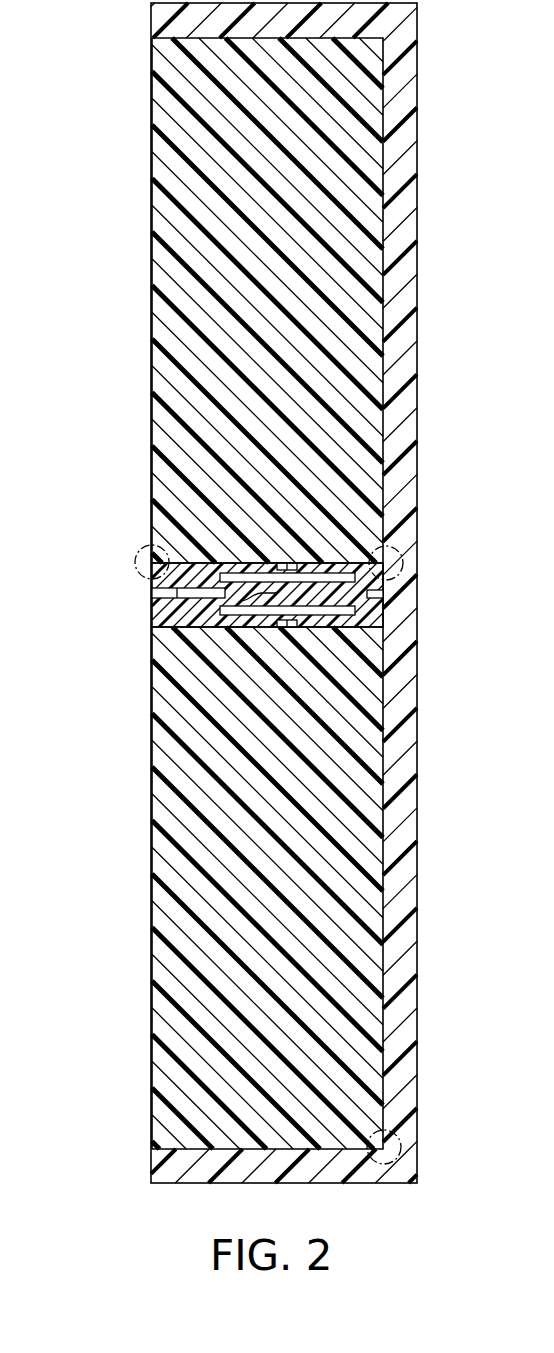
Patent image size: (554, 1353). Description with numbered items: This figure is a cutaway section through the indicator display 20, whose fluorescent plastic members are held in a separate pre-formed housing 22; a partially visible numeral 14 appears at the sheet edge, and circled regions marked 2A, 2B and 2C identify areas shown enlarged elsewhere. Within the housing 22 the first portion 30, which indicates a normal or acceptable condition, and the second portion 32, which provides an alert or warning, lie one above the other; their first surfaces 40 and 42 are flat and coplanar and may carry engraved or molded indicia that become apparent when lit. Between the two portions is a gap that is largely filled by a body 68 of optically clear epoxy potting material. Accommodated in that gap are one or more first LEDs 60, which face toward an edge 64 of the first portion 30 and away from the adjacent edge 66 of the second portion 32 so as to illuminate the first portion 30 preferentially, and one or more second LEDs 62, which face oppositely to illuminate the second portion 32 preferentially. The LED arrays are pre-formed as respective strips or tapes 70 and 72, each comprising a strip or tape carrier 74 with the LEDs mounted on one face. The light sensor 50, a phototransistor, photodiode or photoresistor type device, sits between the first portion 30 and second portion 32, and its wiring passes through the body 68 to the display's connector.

The indicator display 20 is at (72, 128).
The housing 22 is at (450, 174).
The battery cell 14 is at (548, 197).
The first portion 30 is at (355, 358).
The second portion 32 is at (350, 1035).
The first surface 40 is at (152, 328).
The first surface 42 is at (152, 988).
The light sensor 50 is at (156, 593).
The first LEDs 60 is at (286, 563).
The second LEDs 62 is at (284, 628).
The edge of the first portion 64 is at (358, 578).
The edge of the second portion 66 is at (376, 612).
The body of potting material 68 is at (372, 594).
The strip or tape 70 is at (225, 556).
The strip or tape 72 is at (250, 632).
The strip or tape carrier 74 is at (221, 628).
The detail region 2A is at (136, 546).
The detail region 2B is at (390, 548).
The detail region 2C is at (400, 1135).